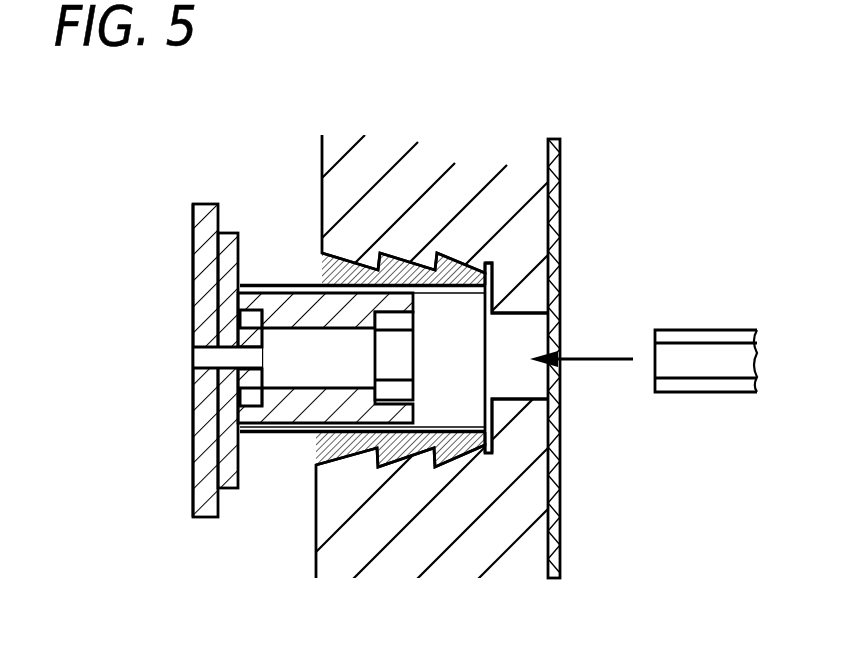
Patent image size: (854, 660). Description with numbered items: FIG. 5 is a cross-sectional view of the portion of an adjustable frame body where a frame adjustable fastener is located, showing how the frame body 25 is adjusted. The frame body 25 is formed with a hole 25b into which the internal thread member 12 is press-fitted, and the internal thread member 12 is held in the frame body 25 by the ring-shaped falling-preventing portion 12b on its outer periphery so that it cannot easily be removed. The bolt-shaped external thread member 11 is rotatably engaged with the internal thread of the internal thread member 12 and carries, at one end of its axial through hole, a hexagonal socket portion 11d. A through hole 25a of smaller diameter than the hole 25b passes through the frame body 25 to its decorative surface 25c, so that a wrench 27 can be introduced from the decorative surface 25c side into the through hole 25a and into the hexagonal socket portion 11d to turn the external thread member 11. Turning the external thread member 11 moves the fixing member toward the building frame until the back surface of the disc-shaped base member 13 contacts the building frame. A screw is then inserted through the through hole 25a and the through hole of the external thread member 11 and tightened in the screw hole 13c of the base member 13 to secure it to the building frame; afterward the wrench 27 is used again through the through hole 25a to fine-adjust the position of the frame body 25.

The external thread member 11 is at (284, 300).
The hexagonal socket portion 11d is at (398, 354).
The internal thread member 12 is at (402, 445).
The falling-preventing portion 12b is at (337, 454).
The base member 13 is at (205, 499).
The screw hole 13c is at (208, 355).
The frame body 25 is at (457, 190).
The through hole 25a is at (540, 382).
The hole 25b is at (492, 266).
The decorative surface 25c is at (548, 557).
The wrench 27 is at (718, 330).